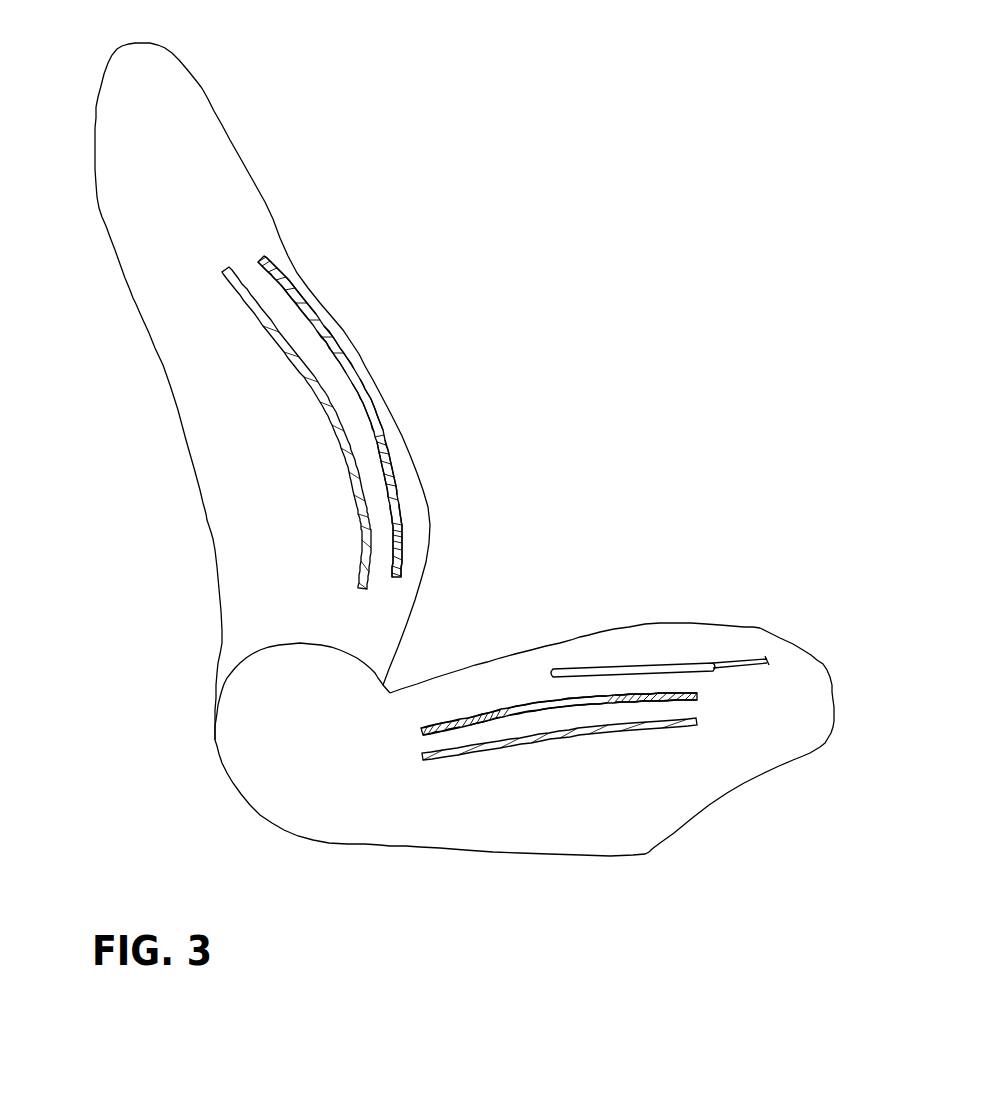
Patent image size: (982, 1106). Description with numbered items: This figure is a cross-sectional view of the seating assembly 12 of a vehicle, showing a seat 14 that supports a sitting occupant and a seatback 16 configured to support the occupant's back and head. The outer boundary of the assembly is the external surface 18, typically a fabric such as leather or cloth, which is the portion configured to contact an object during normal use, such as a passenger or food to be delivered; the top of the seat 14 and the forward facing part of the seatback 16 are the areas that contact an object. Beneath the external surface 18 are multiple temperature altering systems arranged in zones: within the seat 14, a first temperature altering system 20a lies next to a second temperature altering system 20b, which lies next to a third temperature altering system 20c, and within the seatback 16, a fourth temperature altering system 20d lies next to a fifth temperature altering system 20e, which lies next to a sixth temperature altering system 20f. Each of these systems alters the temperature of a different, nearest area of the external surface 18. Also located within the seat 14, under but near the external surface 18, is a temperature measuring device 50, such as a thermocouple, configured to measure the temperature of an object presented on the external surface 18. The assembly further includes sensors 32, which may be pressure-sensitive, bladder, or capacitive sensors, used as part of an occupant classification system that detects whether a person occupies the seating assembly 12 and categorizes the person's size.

The seating assembly 12 is at (520, 158).
The seat 14 is at (826, 668).
The seatback 16 is at (245, 483).
The external surface 18 is at (265, 202).
The first temperature altering system 20a is at (572, 697).
The second temperature altering system 20b is at (492, 717).
The third temperature altering system 20c is at (443, 724).
The fourth temperature altering system 20d is at (366, 413).
The fifth temperature altering system 20e is at (346, 347).
The sixth temperature altering system 20f is at (293, 293).
The sensors 32 is at (273, 335).
The temperature measuring device 50 is at (700, 660).